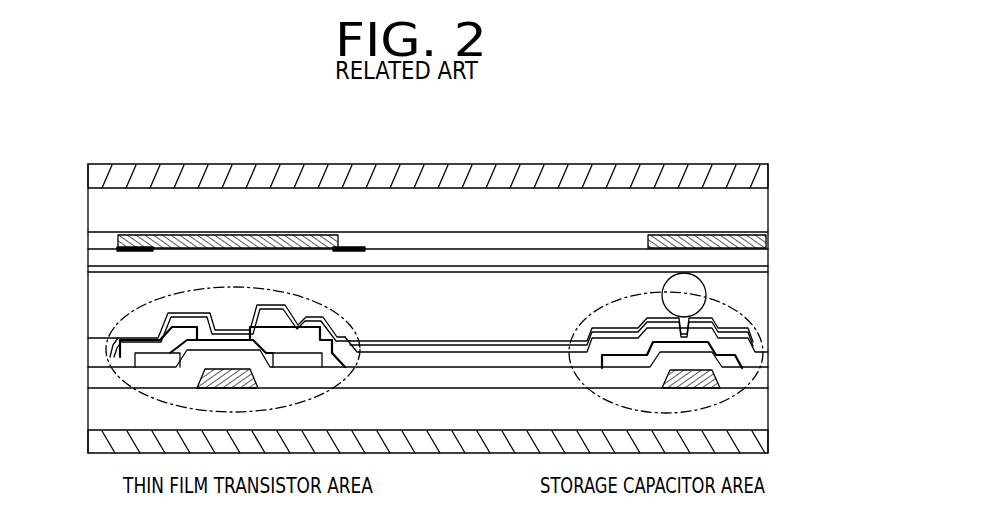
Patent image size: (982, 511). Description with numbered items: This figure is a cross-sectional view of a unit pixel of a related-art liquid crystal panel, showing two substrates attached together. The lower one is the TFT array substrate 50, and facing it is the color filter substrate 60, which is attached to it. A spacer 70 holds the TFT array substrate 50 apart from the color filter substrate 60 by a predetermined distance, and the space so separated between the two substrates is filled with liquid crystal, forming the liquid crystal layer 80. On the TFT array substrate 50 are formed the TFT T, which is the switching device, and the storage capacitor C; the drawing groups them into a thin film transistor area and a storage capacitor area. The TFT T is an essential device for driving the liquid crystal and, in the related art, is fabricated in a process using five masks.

The TFT array substrate 50 is at (742, 413).
The color filter substrate 60 is at (748, 211).
The spacer 70 is at (706, 297).
The liquid crystal layer 80 is at (760, 285).
The TFT T is at (136, 317).
The storage capacitor C is at (760, 332).